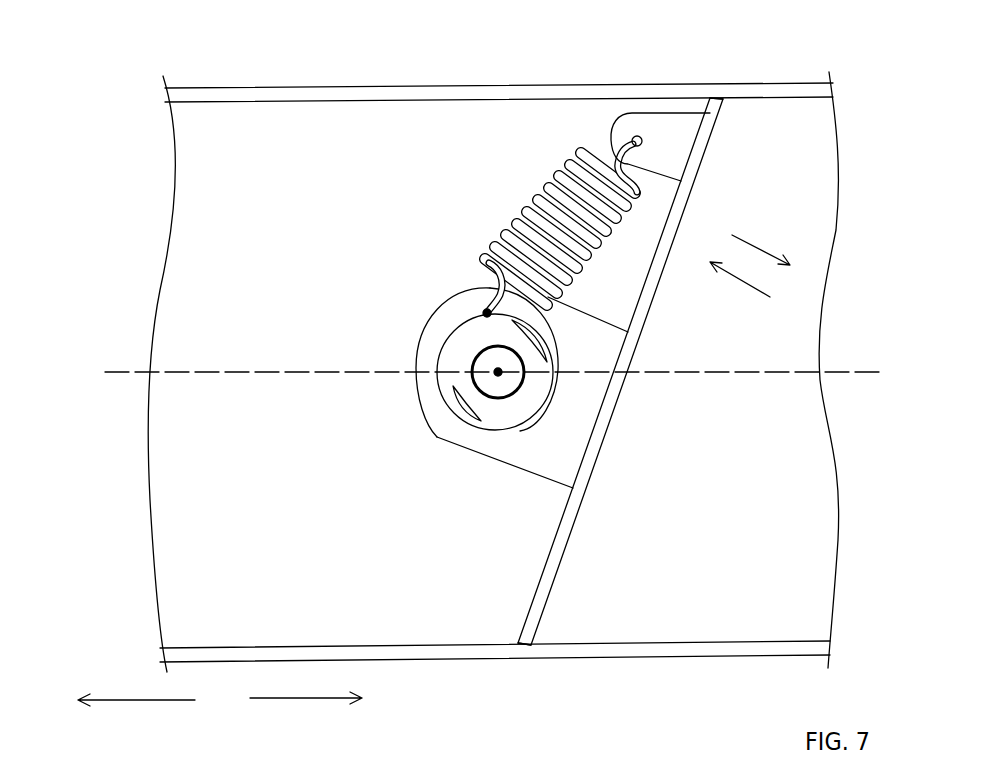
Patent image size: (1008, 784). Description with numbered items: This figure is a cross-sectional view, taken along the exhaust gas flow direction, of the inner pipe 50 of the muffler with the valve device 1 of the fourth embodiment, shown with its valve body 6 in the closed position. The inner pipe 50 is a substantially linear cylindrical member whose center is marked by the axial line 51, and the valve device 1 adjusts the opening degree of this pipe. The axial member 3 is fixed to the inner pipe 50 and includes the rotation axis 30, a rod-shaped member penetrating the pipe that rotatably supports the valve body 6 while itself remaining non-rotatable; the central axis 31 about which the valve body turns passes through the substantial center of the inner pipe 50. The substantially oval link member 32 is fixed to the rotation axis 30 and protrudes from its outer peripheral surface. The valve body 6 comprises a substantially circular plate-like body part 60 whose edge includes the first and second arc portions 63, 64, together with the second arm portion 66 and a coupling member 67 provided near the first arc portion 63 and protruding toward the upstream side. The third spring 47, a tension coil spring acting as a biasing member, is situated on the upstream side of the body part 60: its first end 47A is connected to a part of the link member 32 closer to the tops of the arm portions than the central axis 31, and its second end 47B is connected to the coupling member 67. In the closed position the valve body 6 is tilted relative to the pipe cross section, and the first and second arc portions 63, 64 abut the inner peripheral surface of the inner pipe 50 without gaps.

The valve device 1 is at (692, 585).
The axial member 3 is at (559, 330).
The valve body 6 is at (603, 497).
The rotation axis 30 is at (488, 360).
The central axis 31 is at (498, 372).
The link member 32 is at (462, 322).
The third spring 47 is at (553, 182).
The first end of the third spring 47A is at (496, 295).
The second end of the third spring 47B is at (628, 132).
The inner pipe 50 is at (560, 81).
The axial line 51 is at (257, 374).
The body part 60 is at (617, 400).
The first arc portion 63 is at (723, 100).
The second arc portion 64 is at (518, 642).
The second arm portion 66 is at (455, 428).
The coupling member 67 is at (675, 123).